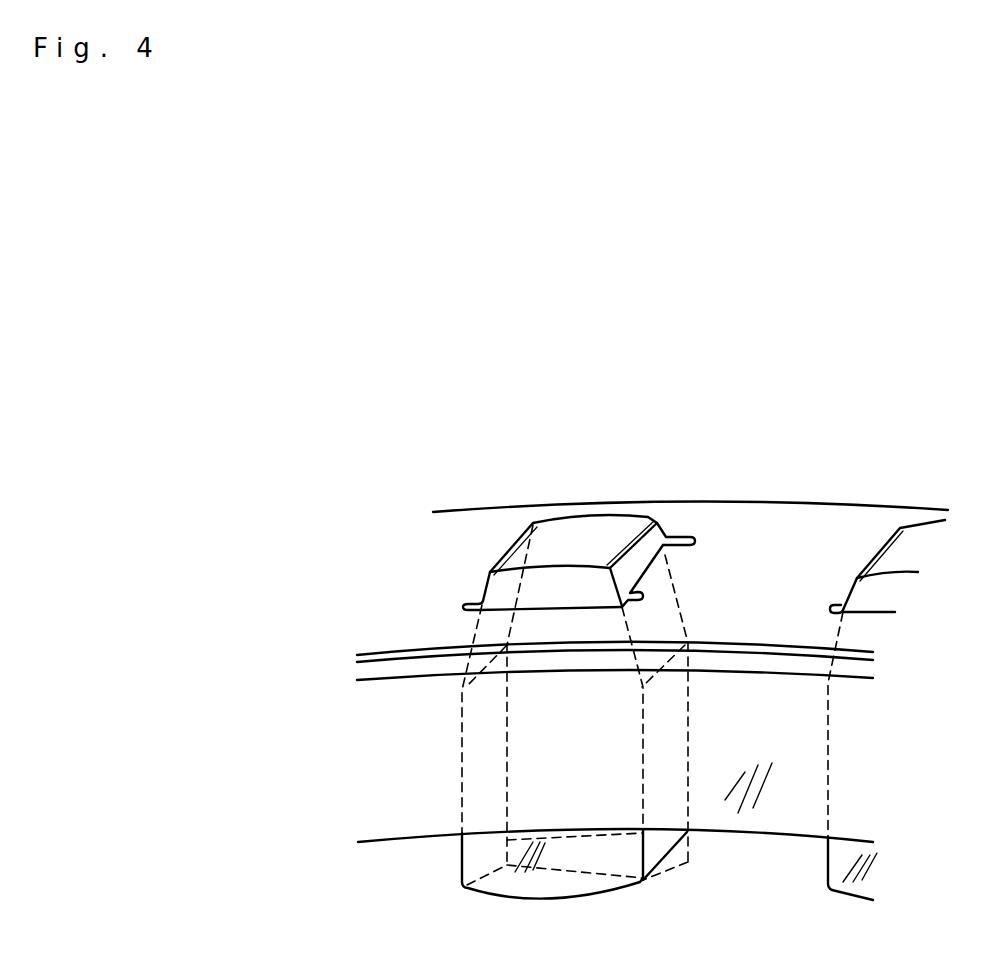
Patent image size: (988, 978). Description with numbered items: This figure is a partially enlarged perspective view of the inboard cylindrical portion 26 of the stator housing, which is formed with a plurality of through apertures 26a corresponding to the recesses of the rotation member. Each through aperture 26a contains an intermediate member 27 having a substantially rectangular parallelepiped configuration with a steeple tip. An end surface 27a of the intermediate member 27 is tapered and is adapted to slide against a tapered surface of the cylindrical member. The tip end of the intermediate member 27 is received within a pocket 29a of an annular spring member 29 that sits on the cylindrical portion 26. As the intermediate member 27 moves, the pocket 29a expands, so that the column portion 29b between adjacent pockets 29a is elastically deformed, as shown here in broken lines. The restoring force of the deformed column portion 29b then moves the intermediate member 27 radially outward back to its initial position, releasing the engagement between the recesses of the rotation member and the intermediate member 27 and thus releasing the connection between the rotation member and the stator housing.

The cylindrical portion 26 is at (372, 710).
The through aperture 26a is at (487, 779).
The intermediate member 27 is at (533, 888).
The tapered end surface 27a is at (662, 868).
The annular spring member 29 is at (440, 580).
The pocket 29a is at (650, 566).
The column portion 29b is at (803, 567).